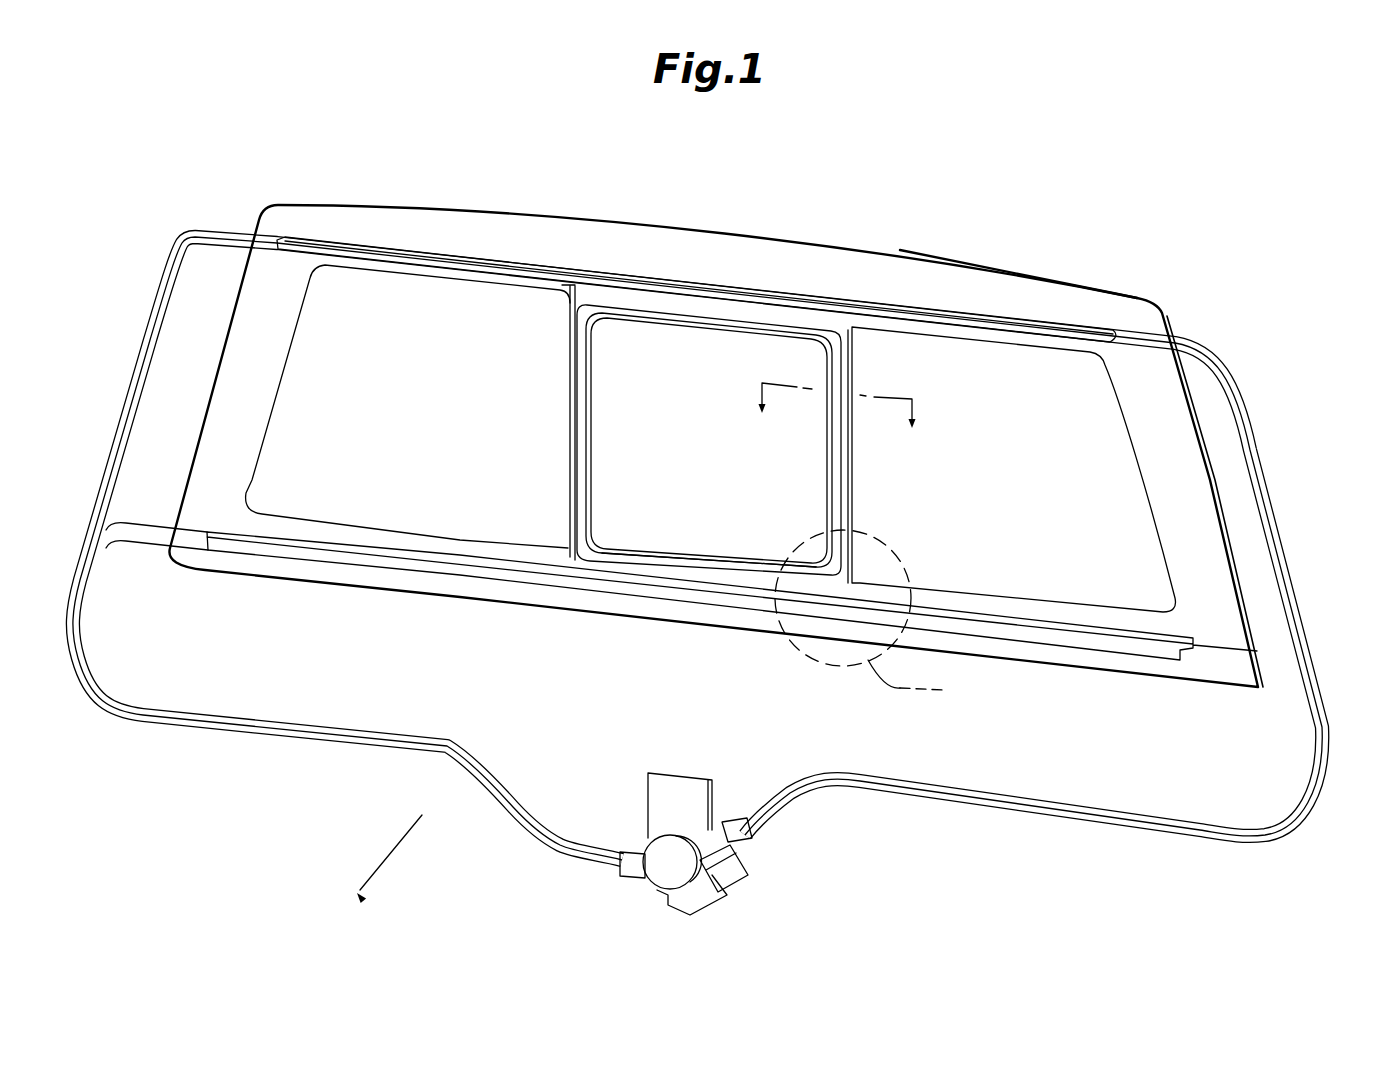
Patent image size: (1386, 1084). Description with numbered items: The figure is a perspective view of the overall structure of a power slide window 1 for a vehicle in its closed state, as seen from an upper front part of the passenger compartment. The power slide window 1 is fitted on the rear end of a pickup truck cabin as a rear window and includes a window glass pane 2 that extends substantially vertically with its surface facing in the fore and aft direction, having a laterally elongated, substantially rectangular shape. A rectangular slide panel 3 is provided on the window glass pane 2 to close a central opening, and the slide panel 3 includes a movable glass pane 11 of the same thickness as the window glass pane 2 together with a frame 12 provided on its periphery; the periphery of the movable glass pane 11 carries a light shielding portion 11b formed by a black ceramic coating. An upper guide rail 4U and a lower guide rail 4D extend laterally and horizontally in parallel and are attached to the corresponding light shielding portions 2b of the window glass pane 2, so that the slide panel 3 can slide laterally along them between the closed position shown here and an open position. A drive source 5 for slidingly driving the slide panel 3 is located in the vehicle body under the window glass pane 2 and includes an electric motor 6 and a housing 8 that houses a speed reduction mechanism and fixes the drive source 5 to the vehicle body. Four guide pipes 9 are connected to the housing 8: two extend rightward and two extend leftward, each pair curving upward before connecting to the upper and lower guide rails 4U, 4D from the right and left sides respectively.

The power slide window 1 is at (1093, 167).
The window glass pane 2 is at (846, 243).
The light shielding portion 2b is at (984, 278).
The slide panel 3 is at (658, 290).
The upper guide rail 4U is at (1070, 322).
The lower guide rail 4D is at (1130, 647).
The drive source 5 is at (713, 908).
The electric motor 6 is at (745, 880).
The housing 8 is at (655, 850).
The guide pipes 9 is at (220, 727).
The movable glass pane 11 is at (681, 535).
The light shielding portion 11b is at (752, 562).
The frame 12 is at (616, 566).